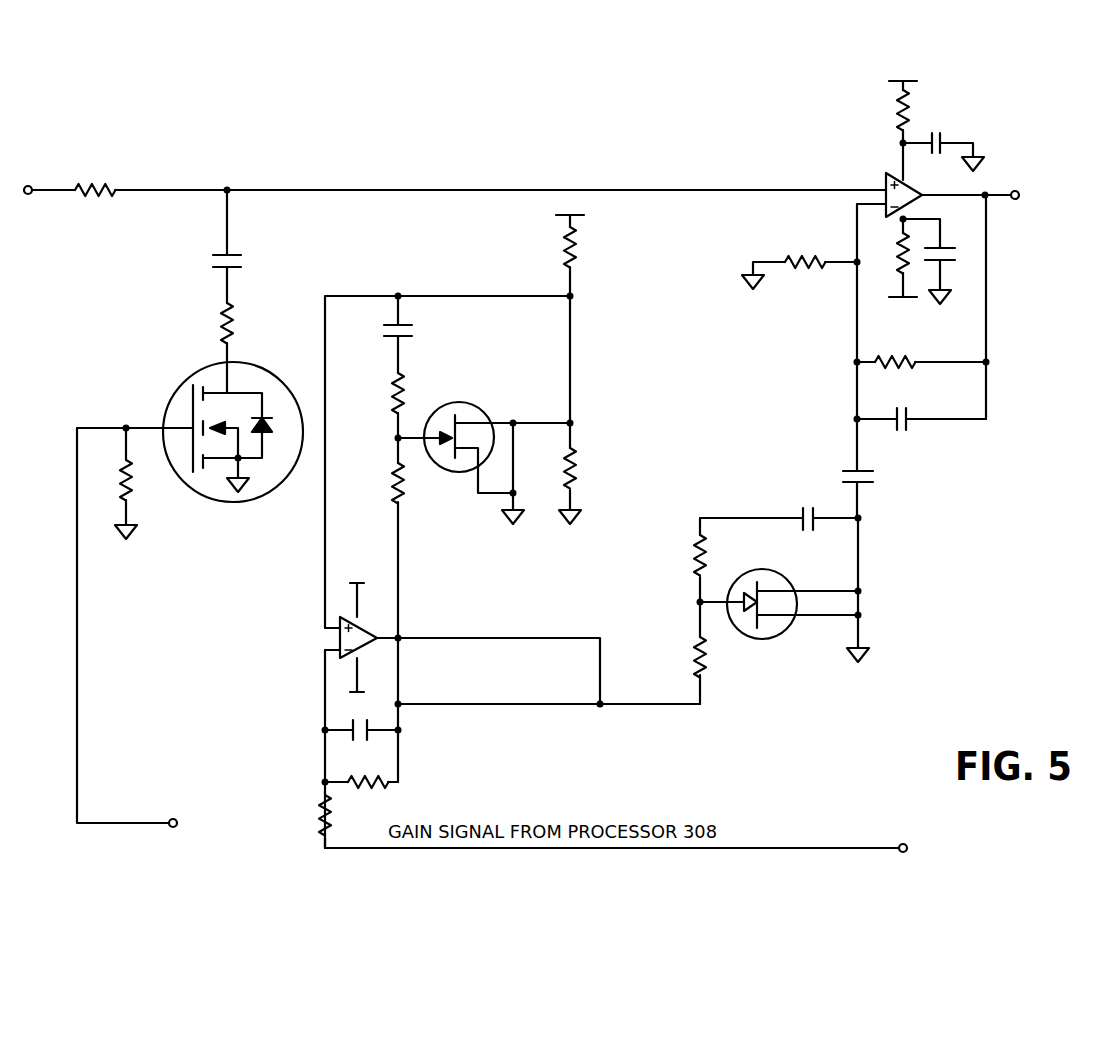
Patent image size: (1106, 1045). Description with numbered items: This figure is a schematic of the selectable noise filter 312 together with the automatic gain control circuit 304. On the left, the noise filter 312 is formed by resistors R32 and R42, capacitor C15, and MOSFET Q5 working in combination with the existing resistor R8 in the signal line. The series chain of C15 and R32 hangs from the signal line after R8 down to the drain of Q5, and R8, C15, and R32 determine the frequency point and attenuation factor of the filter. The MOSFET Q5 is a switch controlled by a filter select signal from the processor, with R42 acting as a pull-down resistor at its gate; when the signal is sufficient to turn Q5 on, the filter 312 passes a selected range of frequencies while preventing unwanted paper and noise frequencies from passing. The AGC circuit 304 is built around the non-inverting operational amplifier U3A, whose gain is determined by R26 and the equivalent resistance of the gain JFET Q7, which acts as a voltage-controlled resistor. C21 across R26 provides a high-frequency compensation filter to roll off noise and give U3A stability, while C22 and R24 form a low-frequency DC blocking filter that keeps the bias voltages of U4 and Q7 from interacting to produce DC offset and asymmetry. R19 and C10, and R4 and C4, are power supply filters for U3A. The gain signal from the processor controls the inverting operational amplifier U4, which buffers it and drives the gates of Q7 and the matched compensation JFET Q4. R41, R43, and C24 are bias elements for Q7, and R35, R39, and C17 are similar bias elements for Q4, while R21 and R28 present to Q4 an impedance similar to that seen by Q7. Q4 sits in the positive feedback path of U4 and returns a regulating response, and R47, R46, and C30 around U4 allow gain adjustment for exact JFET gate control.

The AGC circuit 304 is at (482, 147).
The selectable noise filter 312 is at (92, 370).
The resistor R8 is at (95, 179).
The capacitor C15 is at (245, 246).
The resistor R32 is at (248, 348).
The MOSFET Q5 is at (190, 444).
The pull-down resistor R42 is at (142, 482).
The capacitor C17 is at (379, 334).
The resistor R35 is at (375, 405).
The resistor R39 is at (375, 476).
The compensation JFET Q4 is at (484, 447).
The resistor R21 is at (586, 319).
The resistor R28 is at (587, 473).
The inverting operational amplifier U4 is at (447, 645).
The capacitor C30 is at (362, 721).
The resistor R47 is at (364, 792).
The resistor R46 is at (304, 821).
The resistor R43 is at (674, 653).
The resistor R41 is at (673, 560).
The capacitor C24 is at (781, 505).
The gain JFET Q7 is at (783, 594).
The resistor R4 is at (914, 130).
The capacitor C4 is at (942, 158).
The non-inverting operational amplifier U3A is at (936, 182).
The resistor R19 is at (891, 257).
The capacitor C10 is at (942, 261).
The resistor R24 is at (801, 261).
The resistor R26 is at (922, 349).
The capacitor C21 is at (920, 432).
The capacitor C22 is at (876, 494).